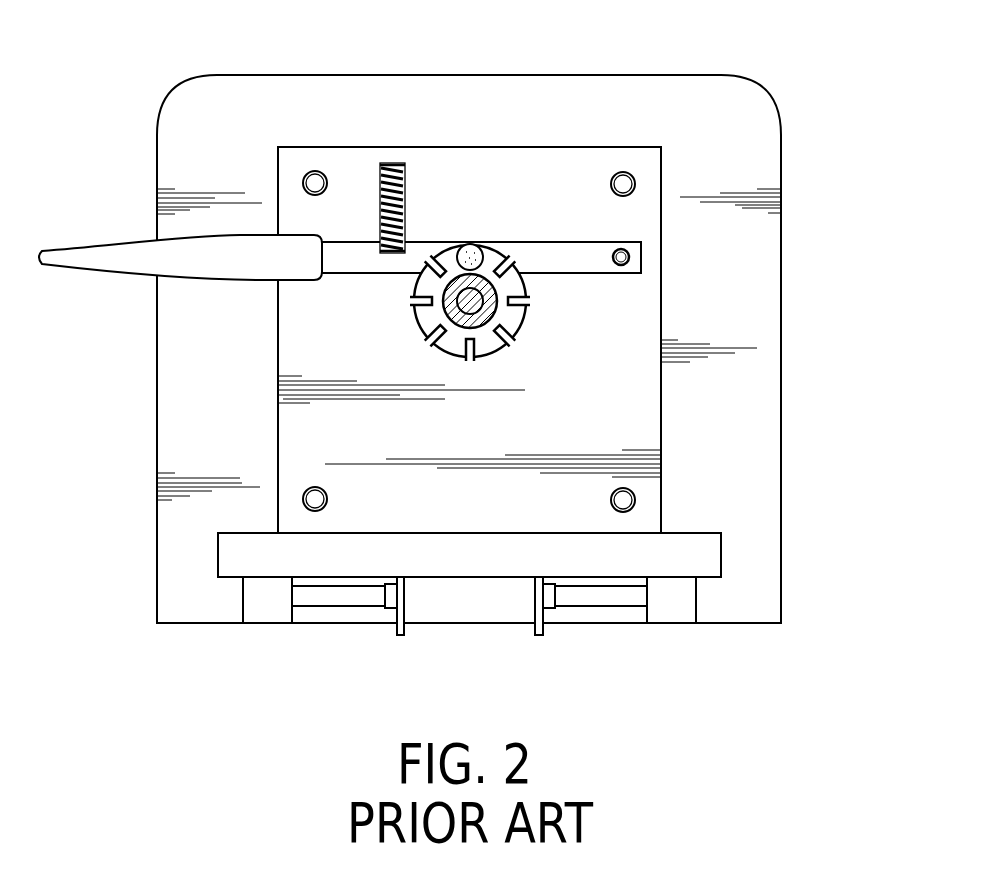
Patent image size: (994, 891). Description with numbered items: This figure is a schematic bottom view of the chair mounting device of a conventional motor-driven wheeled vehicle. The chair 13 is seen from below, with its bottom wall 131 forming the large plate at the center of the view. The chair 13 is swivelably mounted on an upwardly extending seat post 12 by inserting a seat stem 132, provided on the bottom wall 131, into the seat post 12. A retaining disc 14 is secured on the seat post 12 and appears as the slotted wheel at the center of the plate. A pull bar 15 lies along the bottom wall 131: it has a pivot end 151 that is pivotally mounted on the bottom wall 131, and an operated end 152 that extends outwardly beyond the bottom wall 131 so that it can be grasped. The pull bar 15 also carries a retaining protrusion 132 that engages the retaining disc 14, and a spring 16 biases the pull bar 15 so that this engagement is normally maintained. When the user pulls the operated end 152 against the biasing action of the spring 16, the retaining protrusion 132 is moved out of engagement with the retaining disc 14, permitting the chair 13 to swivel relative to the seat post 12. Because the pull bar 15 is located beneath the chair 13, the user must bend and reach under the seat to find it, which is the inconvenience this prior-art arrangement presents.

The seat post 12 is at (493, 315).
The chair 13 is at (782, 448).
The bottom wall 131 is at (320, 430).
The seat stem 132 is at (455, 307).
The retaining disc 14 is at (487, 345).
The pull bar 15 is at (550, 242).
The pivot end 151 is at (641, 257).
The operated end 152 is at (113, 256).
The spring 16 is at (403, 198).